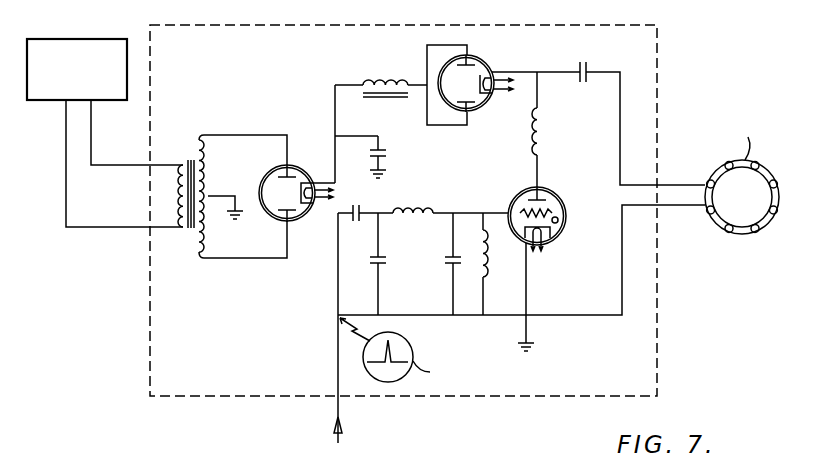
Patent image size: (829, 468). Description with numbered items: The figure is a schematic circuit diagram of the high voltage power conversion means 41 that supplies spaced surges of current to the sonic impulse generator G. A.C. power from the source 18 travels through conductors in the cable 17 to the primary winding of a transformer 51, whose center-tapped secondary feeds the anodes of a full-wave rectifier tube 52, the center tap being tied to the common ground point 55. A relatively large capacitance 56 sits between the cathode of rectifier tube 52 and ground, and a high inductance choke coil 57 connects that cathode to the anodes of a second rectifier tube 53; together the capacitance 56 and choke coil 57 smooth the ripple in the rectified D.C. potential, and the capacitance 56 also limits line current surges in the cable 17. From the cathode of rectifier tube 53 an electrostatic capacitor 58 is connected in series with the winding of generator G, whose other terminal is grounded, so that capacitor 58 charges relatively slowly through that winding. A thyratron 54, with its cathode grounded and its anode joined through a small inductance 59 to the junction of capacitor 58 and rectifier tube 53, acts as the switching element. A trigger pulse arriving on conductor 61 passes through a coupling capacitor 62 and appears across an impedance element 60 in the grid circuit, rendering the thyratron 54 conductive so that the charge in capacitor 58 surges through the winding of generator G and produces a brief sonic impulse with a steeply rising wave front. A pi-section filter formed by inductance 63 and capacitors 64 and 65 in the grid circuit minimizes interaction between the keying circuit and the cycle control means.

The cable 17 is at (62, 128).
The A.C. power source 18 is at (92, 38).
The high voltage power supply 41 is at (150, 283).
The transformer 51 is at (192, 161).
The full-wave rectifier tube 52 is at (301, 173).
The second rectifier tube 53 is at (486, 63).
The thyratron 54 is at (557, 197).
The common ground point 55 is at (239, 227).
The capacitance 56 is at (385, 153).
The choke coil 57 is at (369, 82).
The electrostatic capacitor 58 is at (585, 62).
The small inductance 59 is at (541, 140).
The impedance element 60 is at (488, 262).
The conductor 61 is at (336, 406).
The coupling capacitor 62 is at (357, 224).
The inductance 63 is at (427, 209).
The capacitor 64 is at (386, 262).
The capacitor 65 is at (446, 260).
The sonic impulse generator G is at (745, 236).